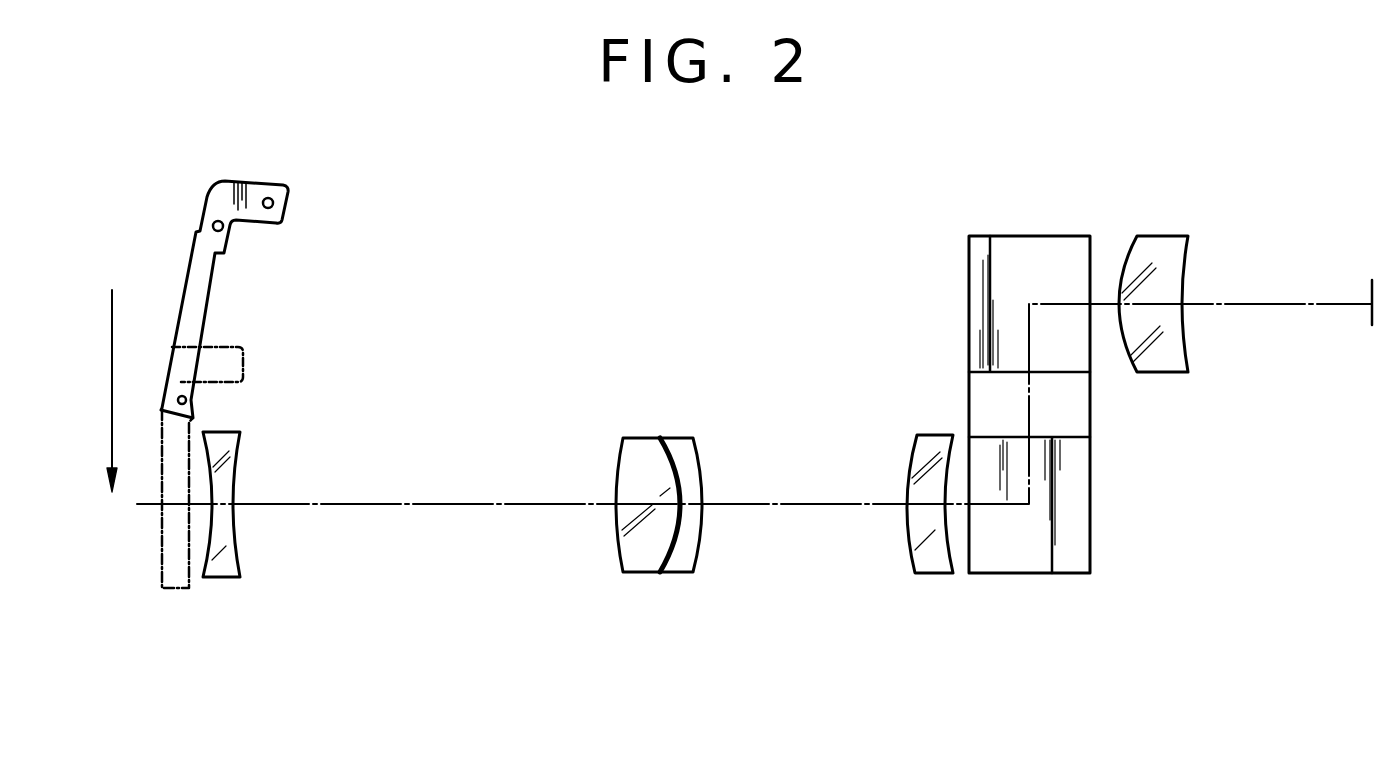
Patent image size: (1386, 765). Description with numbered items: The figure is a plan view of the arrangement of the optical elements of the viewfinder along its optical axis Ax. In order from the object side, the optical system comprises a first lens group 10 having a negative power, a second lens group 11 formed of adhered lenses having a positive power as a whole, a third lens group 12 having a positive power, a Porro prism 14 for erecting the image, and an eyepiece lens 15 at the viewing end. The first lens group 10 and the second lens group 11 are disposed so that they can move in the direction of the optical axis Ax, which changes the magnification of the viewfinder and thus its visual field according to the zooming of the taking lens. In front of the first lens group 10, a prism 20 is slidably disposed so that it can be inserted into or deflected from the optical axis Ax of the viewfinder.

The first lens group 10 is at (225, 572).
The second lens group 11 is at (650, 570).
The third lens group 12 is at (933, 568).
The Porro prism 14 is at (1032, 570).
The eyepiece lens 15 is at (1160, 365).
The prism 20 is at (197, 317).
The optical axis Ax is at (490, 503).